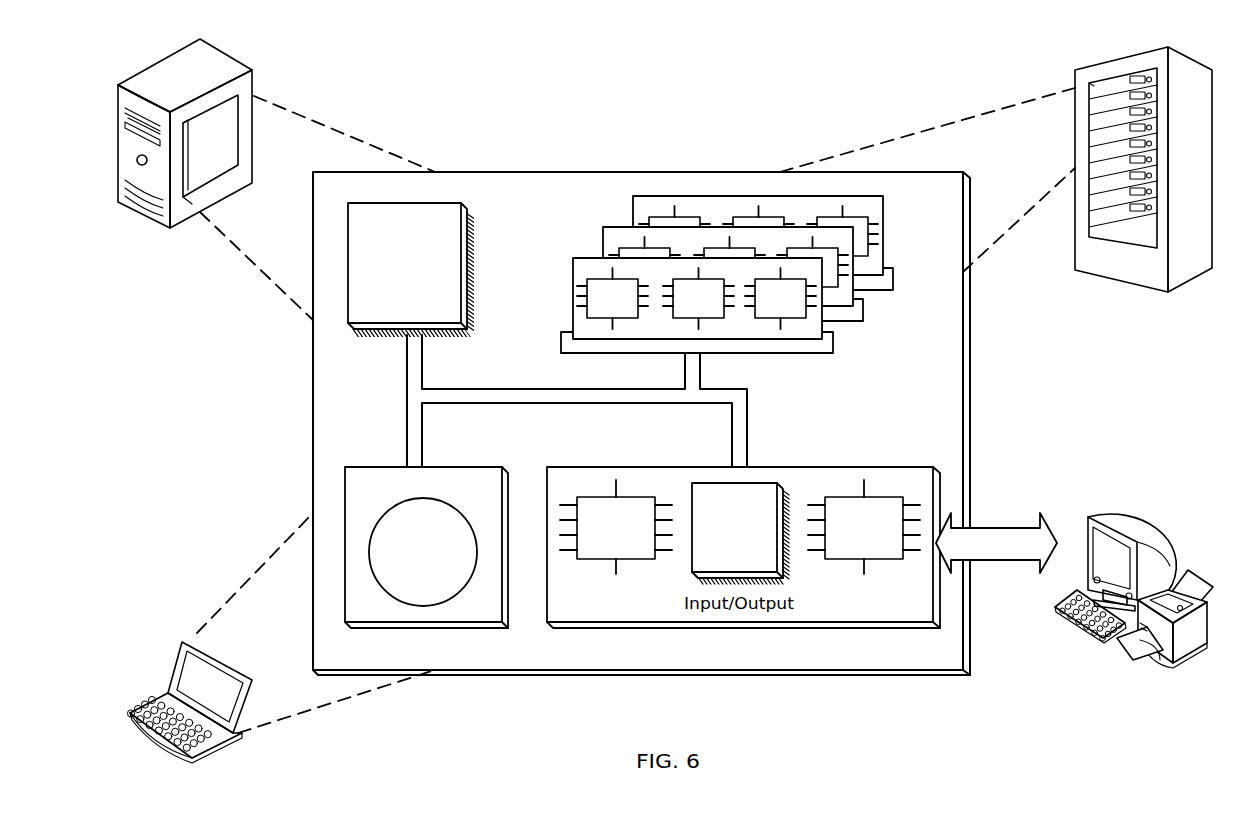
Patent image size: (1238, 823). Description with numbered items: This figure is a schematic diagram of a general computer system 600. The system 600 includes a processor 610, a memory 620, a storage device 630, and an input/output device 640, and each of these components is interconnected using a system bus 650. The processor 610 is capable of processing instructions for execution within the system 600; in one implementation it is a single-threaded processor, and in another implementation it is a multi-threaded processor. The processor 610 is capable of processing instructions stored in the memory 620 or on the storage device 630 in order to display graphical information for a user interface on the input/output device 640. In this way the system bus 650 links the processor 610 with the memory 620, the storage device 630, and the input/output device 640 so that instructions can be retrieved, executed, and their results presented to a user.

The system 600 is at (483, 60).
The processor 610 is at (409, 268).
The memory 620 is at (890, 324).
The storage device 630 is at (426, 547).
The input/output device 640 is at (1090, 518).
The system bus 650 is at (575, 404).